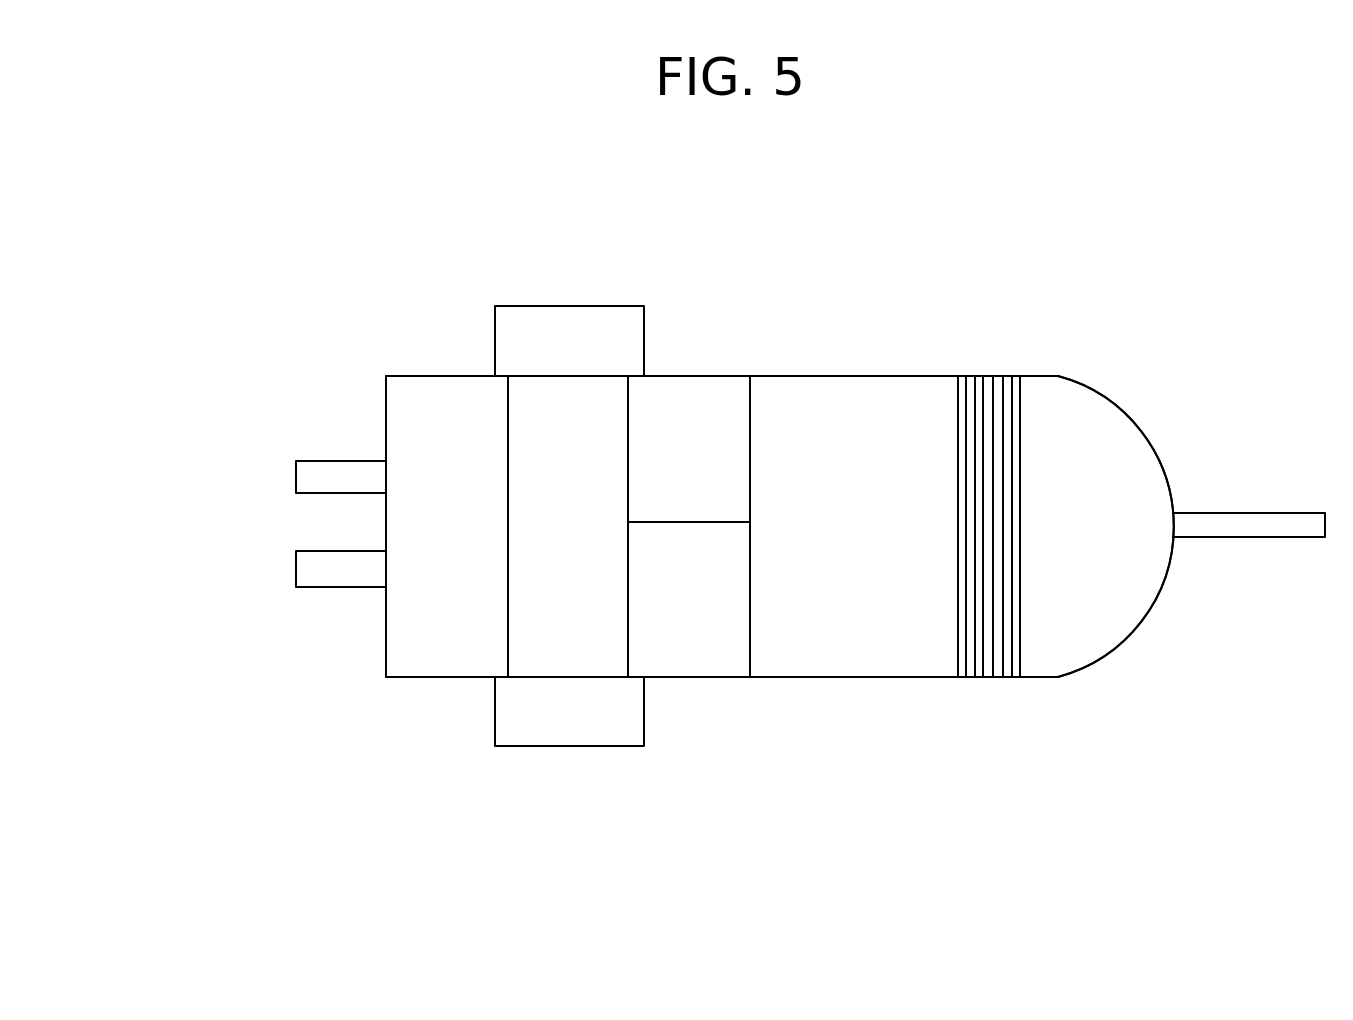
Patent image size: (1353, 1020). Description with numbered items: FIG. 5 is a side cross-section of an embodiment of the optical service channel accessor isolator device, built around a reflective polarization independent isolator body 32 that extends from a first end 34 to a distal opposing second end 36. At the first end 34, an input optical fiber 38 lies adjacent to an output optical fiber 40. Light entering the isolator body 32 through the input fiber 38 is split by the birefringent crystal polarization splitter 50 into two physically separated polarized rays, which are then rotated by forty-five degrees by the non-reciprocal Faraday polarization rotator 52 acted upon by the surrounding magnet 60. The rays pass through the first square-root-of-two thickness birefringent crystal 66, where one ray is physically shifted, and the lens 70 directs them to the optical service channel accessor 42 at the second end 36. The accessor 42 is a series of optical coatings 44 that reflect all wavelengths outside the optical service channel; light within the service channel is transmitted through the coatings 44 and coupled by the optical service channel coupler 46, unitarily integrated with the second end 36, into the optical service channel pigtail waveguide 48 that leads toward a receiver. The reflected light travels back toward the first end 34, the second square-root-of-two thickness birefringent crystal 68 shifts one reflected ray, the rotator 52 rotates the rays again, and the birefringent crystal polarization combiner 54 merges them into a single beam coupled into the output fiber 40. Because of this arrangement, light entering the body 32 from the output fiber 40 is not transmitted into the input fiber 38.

The isolator body 32 is at (818, 288).
The first end 34 is at (391, 327).
The second end 36 is at (1007, 290).
The input optical fiber 38 is at (275, 478).
The output optical fiber 40 is at (277, 573).
The optical service channel accessor 42 is at (1103, 729).
The series of optical coatings 44 is at (992, 698).
The optical service channel optical coupler 46 is at (1135, 623).
The optical service channel pigtail waveguide 48 is at (1255, 537).
The polarization splitter 50 is at (455, 376).
The polarization rotator 52 is at (583, 677).
The polarization combiner 54 is at (413, 677).
The magnet 60 is at (570, 306).
The first birefringent crystal 66 is at (687, 677).
The second birefringent crystal 68 is at (692, 376).
The lens 70 is at (832, 677).